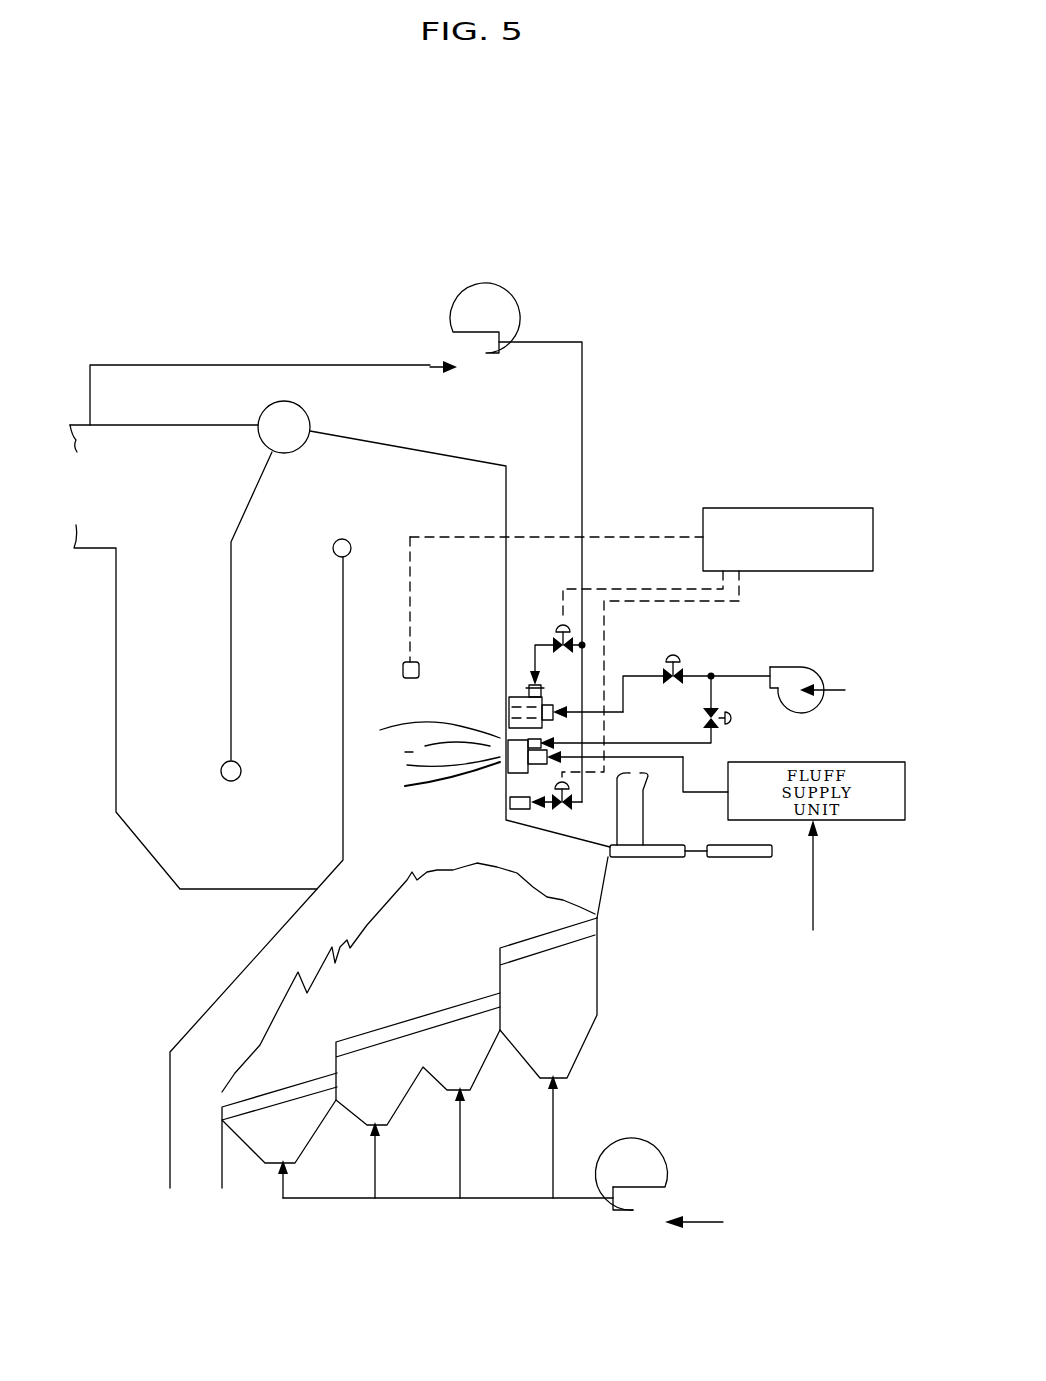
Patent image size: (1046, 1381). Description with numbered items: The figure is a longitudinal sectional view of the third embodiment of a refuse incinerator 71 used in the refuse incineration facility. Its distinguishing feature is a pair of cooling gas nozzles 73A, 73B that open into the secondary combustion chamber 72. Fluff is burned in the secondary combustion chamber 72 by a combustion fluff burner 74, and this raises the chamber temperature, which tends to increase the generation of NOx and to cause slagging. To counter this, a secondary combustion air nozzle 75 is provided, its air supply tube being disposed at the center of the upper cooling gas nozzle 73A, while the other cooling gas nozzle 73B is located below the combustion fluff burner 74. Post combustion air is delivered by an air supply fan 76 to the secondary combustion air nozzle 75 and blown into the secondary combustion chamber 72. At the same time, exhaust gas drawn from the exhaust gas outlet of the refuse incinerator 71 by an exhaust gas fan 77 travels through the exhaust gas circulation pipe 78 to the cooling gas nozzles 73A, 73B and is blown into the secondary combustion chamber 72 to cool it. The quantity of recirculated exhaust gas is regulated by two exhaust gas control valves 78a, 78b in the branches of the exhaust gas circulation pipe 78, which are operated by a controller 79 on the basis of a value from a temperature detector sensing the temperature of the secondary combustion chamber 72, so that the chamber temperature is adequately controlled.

The refuse incinerator 71 is at (472, 450).
The secondary combustion chamber 72 is at (389, 708).
The cooling gas nozzle 73A is at (506, 692).
The cooling gas nozzle 73B is at (507, 805).
The combustion fluff burner 74 is at (500, 770).
The secondary combustion air nozzle 75 is at (522, 698).
The air supply fan 76 is at (800, 672).
The exhaust gas fan 77 is at (463, 342).
The exhaust gas circulation pipe 78 is at (582, 490).
The exhaust gas control valve 78a is at (554, 636).
The exhaust gas control valve 78b is at (562, 812).
The controller 79 is at (748, 508).